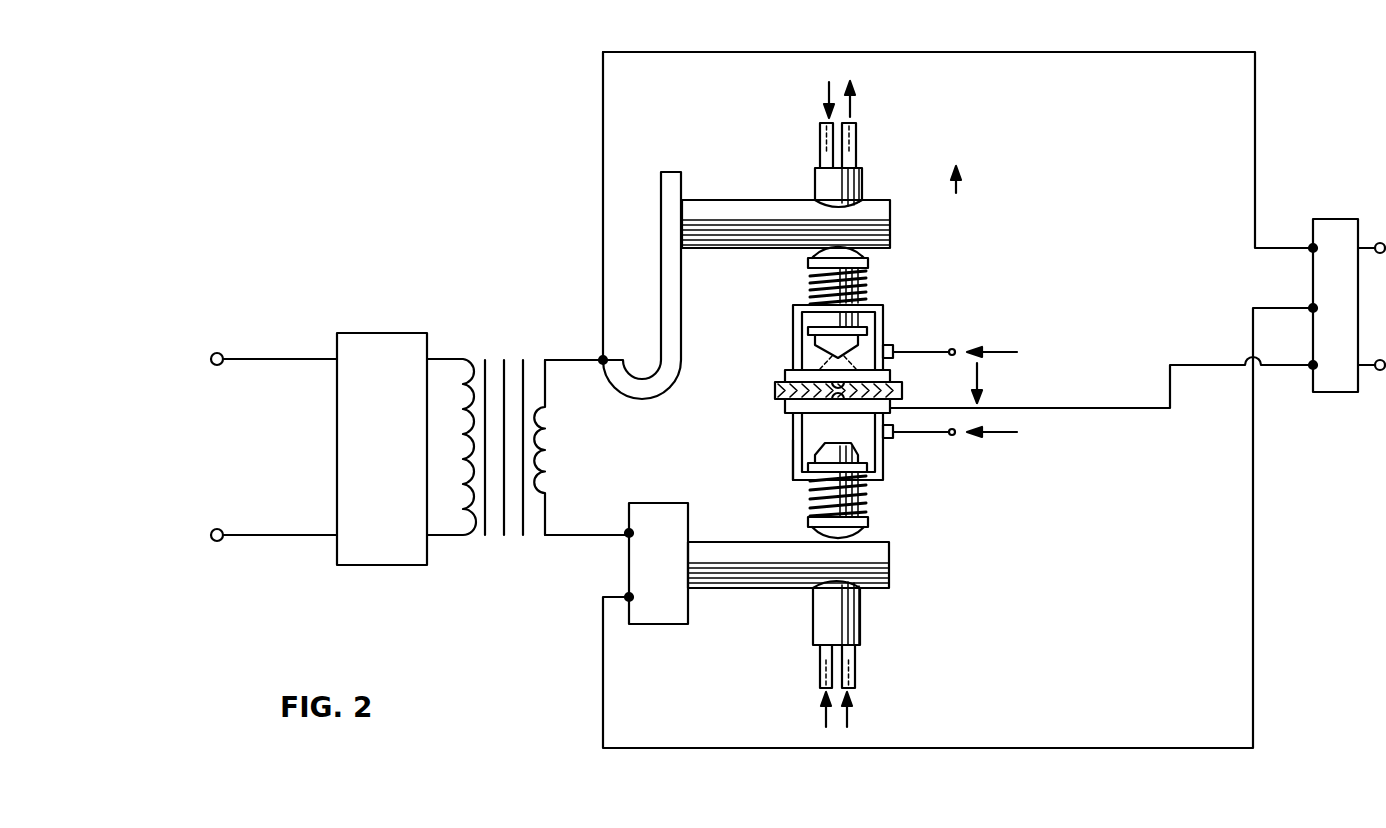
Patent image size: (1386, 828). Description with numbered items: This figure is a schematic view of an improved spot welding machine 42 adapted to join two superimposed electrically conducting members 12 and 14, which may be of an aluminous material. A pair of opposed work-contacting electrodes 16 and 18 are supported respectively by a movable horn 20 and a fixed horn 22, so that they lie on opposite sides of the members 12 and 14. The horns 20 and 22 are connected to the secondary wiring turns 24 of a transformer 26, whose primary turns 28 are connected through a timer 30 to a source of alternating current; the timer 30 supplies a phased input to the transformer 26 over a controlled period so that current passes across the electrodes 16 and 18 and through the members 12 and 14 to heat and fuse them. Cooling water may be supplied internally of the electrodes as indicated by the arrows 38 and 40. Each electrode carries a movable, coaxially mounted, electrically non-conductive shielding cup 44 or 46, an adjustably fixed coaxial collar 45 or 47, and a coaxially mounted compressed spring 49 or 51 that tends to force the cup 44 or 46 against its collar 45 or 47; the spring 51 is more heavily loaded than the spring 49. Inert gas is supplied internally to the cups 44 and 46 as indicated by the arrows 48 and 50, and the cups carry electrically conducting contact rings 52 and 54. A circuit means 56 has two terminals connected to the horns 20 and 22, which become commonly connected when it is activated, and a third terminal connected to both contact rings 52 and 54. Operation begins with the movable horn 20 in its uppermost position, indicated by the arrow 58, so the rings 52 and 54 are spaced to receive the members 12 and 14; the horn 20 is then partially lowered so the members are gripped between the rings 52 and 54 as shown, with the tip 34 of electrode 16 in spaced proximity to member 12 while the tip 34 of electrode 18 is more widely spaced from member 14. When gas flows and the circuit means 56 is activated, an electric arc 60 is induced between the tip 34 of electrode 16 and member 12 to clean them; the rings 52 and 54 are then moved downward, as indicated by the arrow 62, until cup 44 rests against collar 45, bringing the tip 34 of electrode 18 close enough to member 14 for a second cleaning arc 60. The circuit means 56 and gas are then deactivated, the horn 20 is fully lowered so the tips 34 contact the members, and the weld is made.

The electrically conducting member 12 is at (775, 383).
The electrically conducting member 14 is at (780, 402).
The electrode 16 is at (863, 182).
The electrode 18 is at (862, 618).
The movable horn 20 is at (737, 198).
The fixed horn 22 is at (737, 590).
The secondary wiring turns 24 is at (545, 437).
The transformer 26 is at (483, 587).
The primary turns 28 is at (472, 357).
The timer 30 is at (385, 332).
The working surface or tip 34 is at (802, 335).
The cooling water arrow 38 is at (850, 112).
The cooling water arrow 40 is at (848, 697).
The improved spot welding machine 42 is at (1012, 167).
The shielding cup 44 is at (822, 308).
The collar 45 is at (885, 302).
The shielding cup 46 is at (792, 440).
The collar 47 is at (868, 473).
The inert gas supply arrow 48 is at (1010, 357).
The compressed spring 49 is at (867, 282).
The inert gas supply arrow 50 is at (968, 437).
The compressed spring 51 is at (865, 505).
The contact ring 52 is at (785, 368).
The contact ring 54 is at (790, 416).
The circuit means 56 is at (1352, 398).
The arrow 58 is at (956, 193).
The electric arc 60 is at (885, 330).
The arrow 62 is at (977, 373).